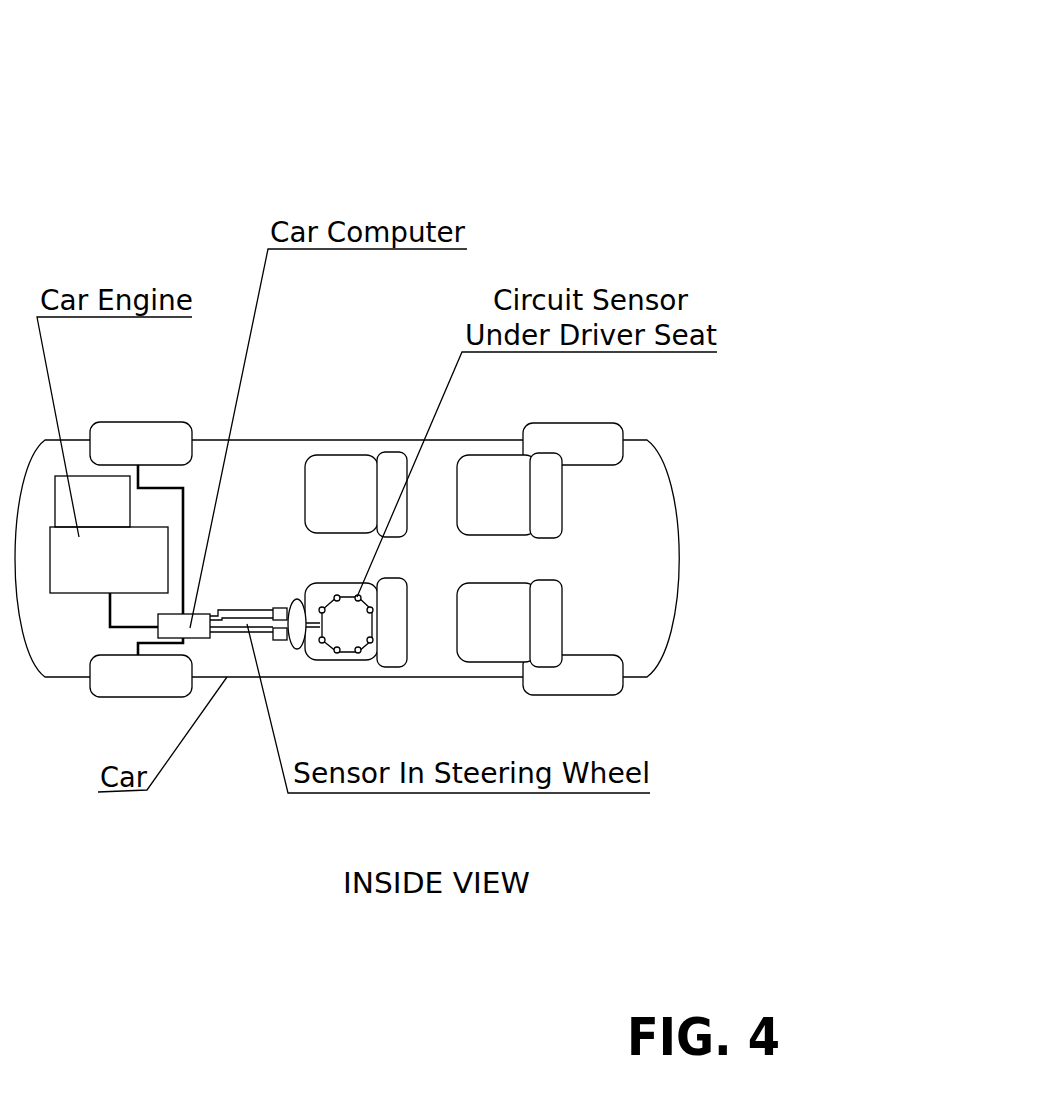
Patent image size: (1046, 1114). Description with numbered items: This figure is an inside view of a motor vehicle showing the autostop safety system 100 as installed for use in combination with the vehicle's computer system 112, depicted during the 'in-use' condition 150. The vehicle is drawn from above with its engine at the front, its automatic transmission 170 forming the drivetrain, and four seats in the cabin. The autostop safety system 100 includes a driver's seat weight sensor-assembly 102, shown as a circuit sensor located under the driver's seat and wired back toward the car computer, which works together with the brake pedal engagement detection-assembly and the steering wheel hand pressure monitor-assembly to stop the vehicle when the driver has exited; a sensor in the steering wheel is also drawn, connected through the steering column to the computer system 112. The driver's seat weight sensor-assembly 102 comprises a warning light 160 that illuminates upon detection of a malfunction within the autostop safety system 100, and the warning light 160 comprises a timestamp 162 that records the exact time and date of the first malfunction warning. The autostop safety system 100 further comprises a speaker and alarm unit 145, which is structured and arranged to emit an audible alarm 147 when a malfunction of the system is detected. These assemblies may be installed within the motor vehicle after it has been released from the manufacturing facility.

The autostop safety system 100 is at (513, 93).
The driver's seat weight sensor-assembly 102 is at (552, 125).
The 'in-use' condition 150 is at (592, 160).
The warning light 160 is at (227, 523).
The timestamp 162 is at (248, 525).
The automatic transmission 170 is at (97, 507).
The speaker and alarm unit 145 is at (175, 622).
The audible alarm 147 is at (183, 628).
The computer system 112 is at (200, 636).